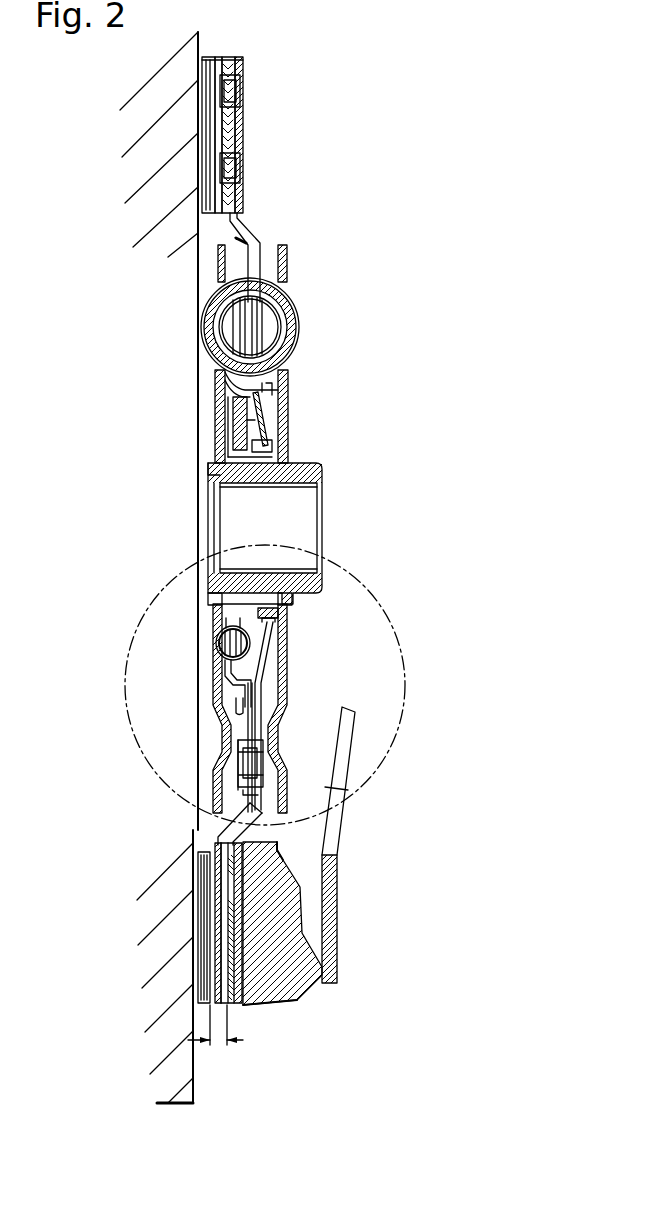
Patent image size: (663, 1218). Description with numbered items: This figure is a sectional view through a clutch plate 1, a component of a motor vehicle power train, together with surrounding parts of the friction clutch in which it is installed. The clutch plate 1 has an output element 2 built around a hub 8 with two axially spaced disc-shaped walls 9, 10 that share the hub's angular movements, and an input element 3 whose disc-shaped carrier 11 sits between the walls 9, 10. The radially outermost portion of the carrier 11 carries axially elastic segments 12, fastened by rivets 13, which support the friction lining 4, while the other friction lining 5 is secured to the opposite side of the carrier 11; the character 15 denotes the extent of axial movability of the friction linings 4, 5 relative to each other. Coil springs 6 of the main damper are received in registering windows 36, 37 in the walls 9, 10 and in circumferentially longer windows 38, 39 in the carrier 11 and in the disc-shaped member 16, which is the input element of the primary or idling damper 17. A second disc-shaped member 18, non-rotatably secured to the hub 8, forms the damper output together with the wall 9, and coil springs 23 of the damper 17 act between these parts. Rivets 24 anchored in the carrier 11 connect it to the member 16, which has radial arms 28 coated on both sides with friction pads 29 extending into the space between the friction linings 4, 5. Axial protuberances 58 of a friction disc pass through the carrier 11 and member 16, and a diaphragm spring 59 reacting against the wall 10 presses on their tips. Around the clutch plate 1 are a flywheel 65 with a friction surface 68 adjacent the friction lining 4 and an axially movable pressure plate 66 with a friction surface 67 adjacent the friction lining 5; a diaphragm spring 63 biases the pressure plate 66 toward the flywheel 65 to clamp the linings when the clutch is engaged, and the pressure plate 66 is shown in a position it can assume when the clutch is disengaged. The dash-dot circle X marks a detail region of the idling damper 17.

The clutch plate 1 is at (285, 163).
The output element 2 is at (325, 525).
The hub 8 is at (320, 468).
The input element 3 is at (331, 866).
The carrier 11 is at (258, 813).
The friction lining 4 is at (200, 997).
The friction lining 5 is at (243, 1003).
The coil spring 6 is at (293, 303).
The wall 9 is at (213, 787).
The wall 10 is at (285, 805).
The axially elastic segment 12 is at (220, 200).
The rivet 13 is at (243, 88).
The extent of axial movability 15 is at (227, 1026).
The disc-shaped member 16 is at (232, 724).
The idling damper 17 is at (196, 652).
The disc-shaped member 18 is at (264, 650).
The energy storing element 23 is at (216, 637).
The rivet 24 is at (267, 752).
The arm 28 is at (213, 847).
The friction pad 29 is at (220, 898).
The window 36 is at (233, 333).
The window 37 is at (277, 333).
The window 38 is at (265, 268).
The window 39 is at (240, 268).
The axial protuberance 58 is at (227, 390).
The diaphragm spring 59 is at (287, 395).
The diaphragm spring 63 is at (340, 773).
The flywheel 65 is at (180, 1060).
The pressure plate 66 is at (292, 963).
The friction surface 67 is at (245, 908).
The friction surface 68 is at (197, 878).
The detail circle X is at (407, 661).